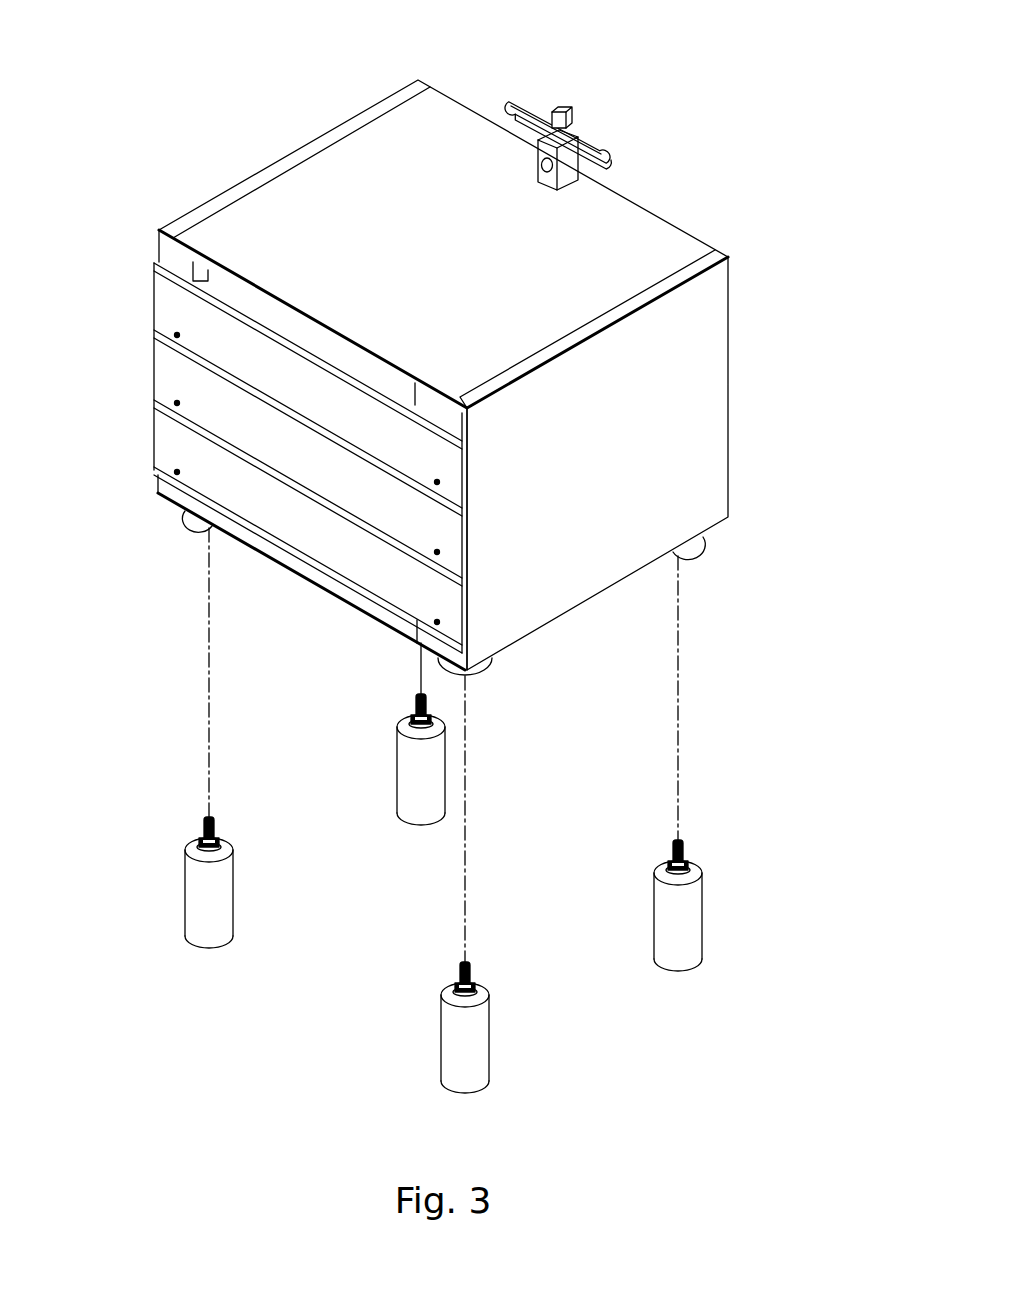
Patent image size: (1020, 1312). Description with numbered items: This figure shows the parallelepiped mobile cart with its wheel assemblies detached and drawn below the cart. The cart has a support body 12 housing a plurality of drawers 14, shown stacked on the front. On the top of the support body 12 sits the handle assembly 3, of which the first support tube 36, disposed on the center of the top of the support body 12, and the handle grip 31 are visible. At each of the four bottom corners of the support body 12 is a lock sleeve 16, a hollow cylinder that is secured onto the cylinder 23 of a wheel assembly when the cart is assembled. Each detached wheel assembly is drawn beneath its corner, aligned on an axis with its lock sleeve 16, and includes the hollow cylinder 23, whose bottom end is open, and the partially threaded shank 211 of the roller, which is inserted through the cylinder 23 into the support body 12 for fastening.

The handle assembly 3 is at (598, 103).
The support body 12 is at (712, 385).
The drawers 14 is at (180, 322).
The lock sleeve 16 is at (187, 522).
The hollow cylinder 23 is at (410, 778).
The handle grip 31 is at (522, 105).
The first support tube 36 is at (566, 172).
The partially threaded shank 211 is at (410, 714).